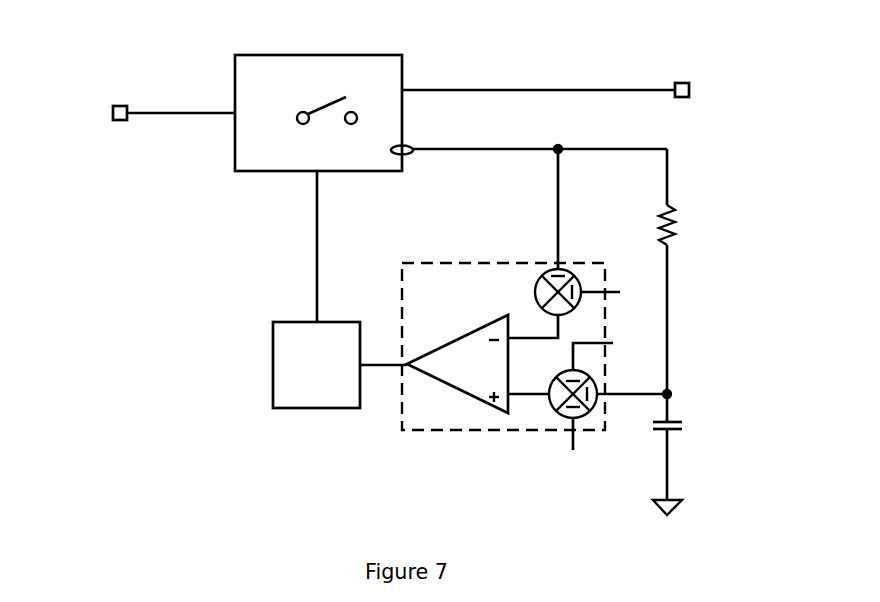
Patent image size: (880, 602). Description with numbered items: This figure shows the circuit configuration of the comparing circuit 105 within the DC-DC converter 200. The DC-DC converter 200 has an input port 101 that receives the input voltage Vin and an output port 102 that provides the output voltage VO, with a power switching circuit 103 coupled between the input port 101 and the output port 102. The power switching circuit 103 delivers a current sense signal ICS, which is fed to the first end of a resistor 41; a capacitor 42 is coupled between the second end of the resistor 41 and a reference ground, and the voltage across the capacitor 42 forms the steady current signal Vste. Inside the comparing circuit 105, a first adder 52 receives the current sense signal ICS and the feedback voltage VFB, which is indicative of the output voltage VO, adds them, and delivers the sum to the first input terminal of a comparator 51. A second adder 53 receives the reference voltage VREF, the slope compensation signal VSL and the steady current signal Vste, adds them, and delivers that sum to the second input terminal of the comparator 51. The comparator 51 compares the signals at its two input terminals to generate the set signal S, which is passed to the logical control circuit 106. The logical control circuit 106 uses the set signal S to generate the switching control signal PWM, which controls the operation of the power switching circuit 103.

The DC-DC converter 200 is at (122, 50).
The input port 101 is at (124, 127).
The output port 102 is at (700, 112).
The power switching circuit 103 is at (287, 91).
The comparing circuit 105 is at (457, 299).
The logical control circuit 106 is at (302, 289).
The resistor 41 is at (651, 225).
The capacitor 42 is at (656, 440).
The comparator 51 is at (540, 292).
The first adder 52 is at (559, 400).
The second adder 53 is at (457, 364).